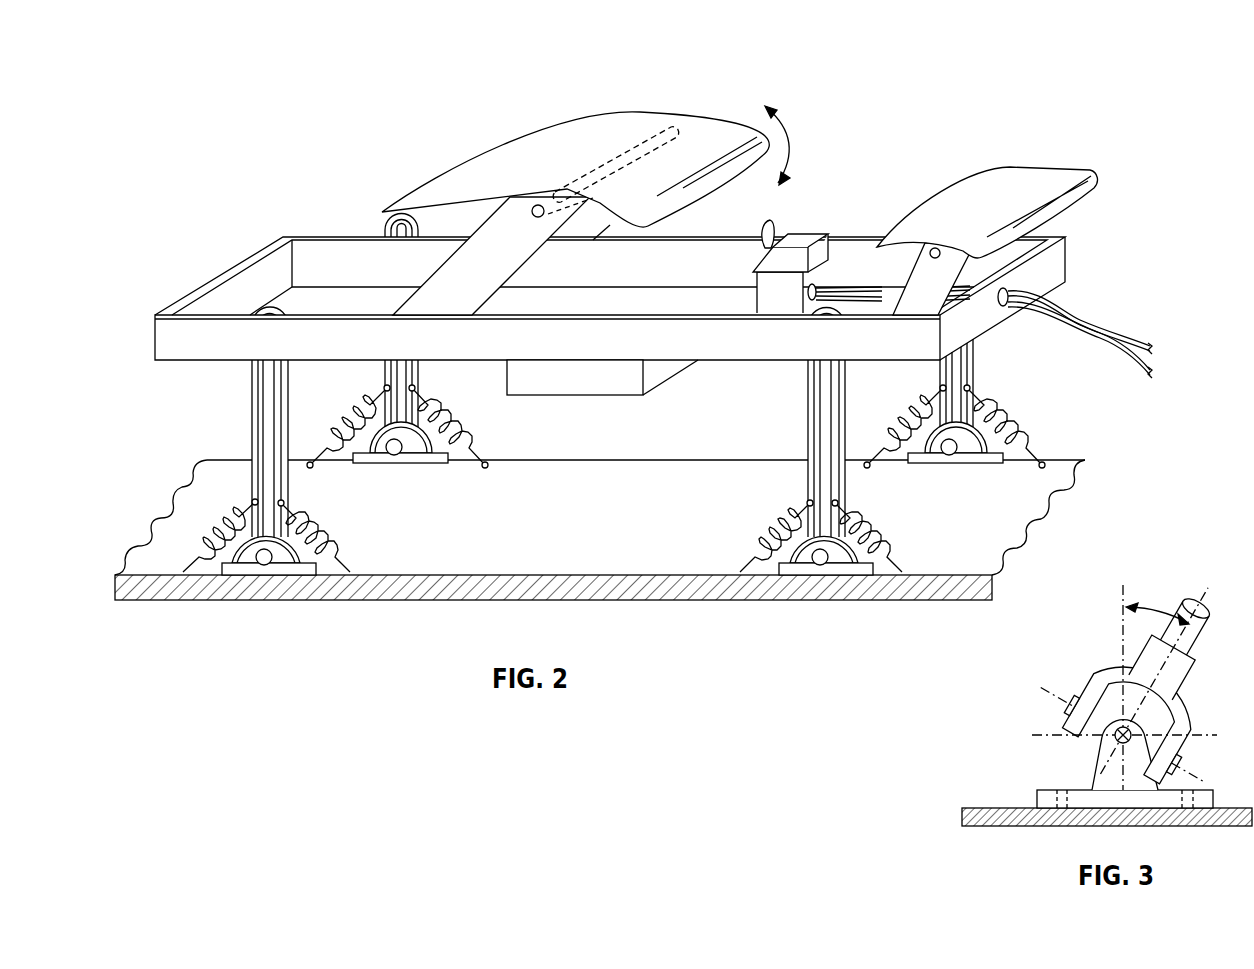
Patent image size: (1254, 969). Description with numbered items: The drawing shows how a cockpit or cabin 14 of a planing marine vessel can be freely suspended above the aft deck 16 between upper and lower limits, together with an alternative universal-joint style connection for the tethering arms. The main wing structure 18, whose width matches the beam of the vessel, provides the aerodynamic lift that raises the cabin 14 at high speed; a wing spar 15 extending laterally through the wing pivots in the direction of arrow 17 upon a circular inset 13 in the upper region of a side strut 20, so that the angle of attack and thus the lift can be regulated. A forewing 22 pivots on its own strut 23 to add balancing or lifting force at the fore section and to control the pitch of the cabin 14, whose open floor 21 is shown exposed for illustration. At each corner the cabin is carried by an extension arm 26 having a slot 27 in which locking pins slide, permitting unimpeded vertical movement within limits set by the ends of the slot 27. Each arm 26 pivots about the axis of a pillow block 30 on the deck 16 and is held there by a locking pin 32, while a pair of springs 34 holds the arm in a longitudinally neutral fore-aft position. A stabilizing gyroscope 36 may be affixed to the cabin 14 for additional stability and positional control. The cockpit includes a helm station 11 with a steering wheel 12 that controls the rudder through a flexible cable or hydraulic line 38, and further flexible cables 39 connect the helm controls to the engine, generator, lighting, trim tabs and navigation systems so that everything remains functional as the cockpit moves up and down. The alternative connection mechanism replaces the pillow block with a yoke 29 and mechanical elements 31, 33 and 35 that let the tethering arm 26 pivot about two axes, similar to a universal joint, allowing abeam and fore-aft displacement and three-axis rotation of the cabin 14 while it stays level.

In FIG. 2, the helm station 11 is at (817, 243).
In FIG. 2, the steering wheel 12 is at (757, 231).
In FIG. 2, the circular inset 13 is at (535, 206).
In FIG. 2, the cabin 14 is at (242, 262).
In FIG. 2, the slot 15 is at (647, 137).
In FIG. 2, the aft deck 16 is at (590, 522).
In FIG. 2, the pivot direction arrow 17 is at (791, 143).
In FIG. 2, the main wing structure 18 is at (708, 123).
In FIG. 2, the strut 20 is at (547, 248).
In FIG. 2, the platform floor 21 is at (624, 309).
In FIG. 2, the forewing 22 is at (1008, 183).
In FIG. 2, the strut 23 is at (897, 278).
In FIG. 2, the extension arm 26 is at (255, 403).
In FIG. 3, the extension arm 26 is at (1170, 594).
In FIG. 2, the slot 27 is at (270, 447).
In FIG. 3, the yoke 29 is at (1104, 698).
In FIG. 2, the pillow block 30 is at (247, 565).
In FIG. 3, the mechanical element 31 is at (1047, 790).
In FIG. 2, the locking pin 32 is at (264, 563).
In FIG. 3, the mechanical element 33 is at (1090, 772).
In FIG. 2, the spring 34 is at (250, 513).
In FIG. 3, the mechanical element 35 is at (1119, 653).
In FIG. 2, the stabilizing gyroscope 36 is at (587, 397).
In FIG. 2, the flexible cable or hydraulic line 38 is at (1078, 322).
In FIG. 2, the flexible cable 39 is at (1113, 338).
In FIG. 3, the flexible cable 39 is at (1157, 701).